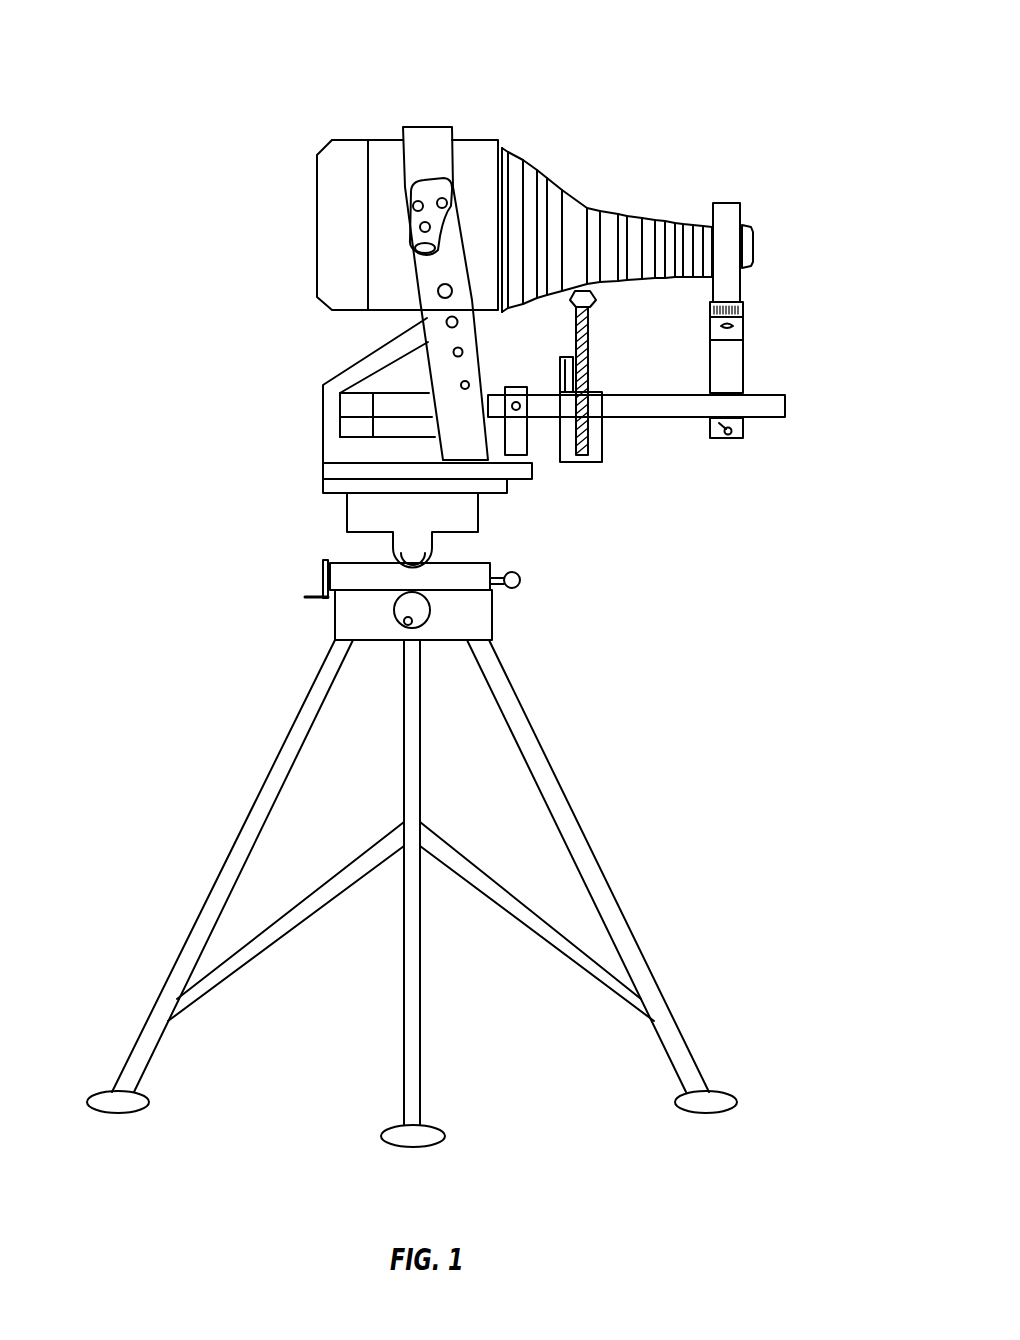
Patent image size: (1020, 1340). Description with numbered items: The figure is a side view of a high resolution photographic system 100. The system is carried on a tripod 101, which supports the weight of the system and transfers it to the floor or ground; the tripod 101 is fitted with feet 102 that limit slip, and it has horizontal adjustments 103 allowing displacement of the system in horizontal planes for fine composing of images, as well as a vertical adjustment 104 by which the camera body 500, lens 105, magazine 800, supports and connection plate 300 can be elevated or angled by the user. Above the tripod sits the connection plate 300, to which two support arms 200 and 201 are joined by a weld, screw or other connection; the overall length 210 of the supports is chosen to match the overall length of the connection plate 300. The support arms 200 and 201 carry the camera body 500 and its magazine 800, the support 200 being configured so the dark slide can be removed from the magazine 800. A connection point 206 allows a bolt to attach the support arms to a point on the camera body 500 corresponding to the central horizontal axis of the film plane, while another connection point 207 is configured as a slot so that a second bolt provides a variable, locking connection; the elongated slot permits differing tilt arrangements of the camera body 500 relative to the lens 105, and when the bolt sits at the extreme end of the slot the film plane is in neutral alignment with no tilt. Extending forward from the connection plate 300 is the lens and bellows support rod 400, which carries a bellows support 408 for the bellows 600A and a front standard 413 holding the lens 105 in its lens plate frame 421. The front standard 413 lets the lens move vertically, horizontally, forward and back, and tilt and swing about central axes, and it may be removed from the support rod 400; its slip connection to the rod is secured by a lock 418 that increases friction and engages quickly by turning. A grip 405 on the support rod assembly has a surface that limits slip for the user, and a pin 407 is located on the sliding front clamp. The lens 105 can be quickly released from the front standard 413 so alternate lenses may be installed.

The high resolution photographic system 100 is at (166, 46).
The tripod 101 is at (599, 858).
The feet 102 is at (105, 1093).
The horizontal adjustments 103 is at (323, 577).
The vertical adjustment 104 is at (392, 546).
The lens 105 is at (755, 243).
The support arm 200 is at (354, 390).
The support arm 201 is at (298, 369).
The connection point 206 is at (416, 250).
The connection point 207 is at (452, 193).
The overall length 210 is at (531, 473).
The connection plate 300 is at (328, 472).
The lens and bellows support rod 400 is at (670, 420).
The grip 405 is at (517, 388).
The pin 407 is at (508, 495).
The bellows support 408 is at (590, 377).
The front standard 413 is at (745, 373).
The lock 418 is at (732, 434).
The front standard lens plate frame 421 is at (742, 208).
The camera body 500 is at (423, 126).
The bellows 600A is at (572, 193).
The magazine 800 is at (335, 152).